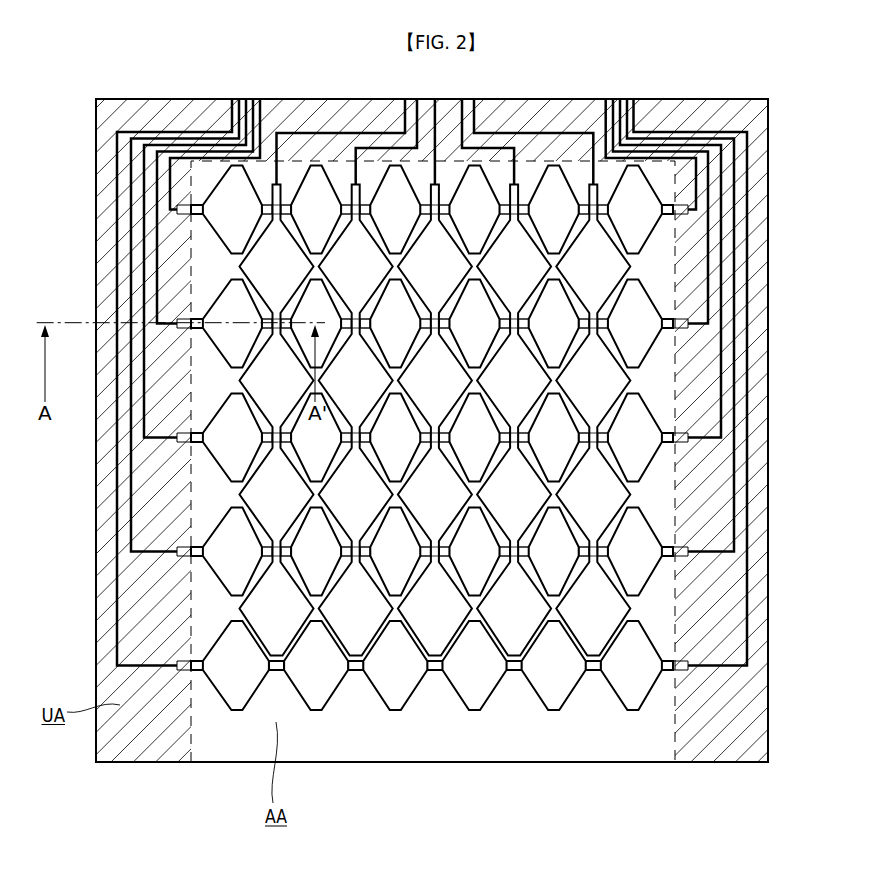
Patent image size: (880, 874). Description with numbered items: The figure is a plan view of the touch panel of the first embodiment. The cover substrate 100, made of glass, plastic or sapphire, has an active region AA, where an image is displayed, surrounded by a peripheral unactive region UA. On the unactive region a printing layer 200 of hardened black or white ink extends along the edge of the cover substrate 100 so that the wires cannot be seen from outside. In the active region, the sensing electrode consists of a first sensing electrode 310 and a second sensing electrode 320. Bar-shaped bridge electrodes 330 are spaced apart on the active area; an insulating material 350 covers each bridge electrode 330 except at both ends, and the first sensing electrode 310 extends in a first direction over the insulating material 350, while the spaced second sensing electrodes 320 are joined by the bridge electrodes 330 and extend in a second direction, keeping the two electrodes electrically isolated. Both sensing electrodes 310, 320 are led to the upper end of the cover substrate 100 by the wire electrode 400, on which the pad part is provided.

The cover substrate 100 is at (768, 727).
The printing layer 200 is at (717, 742).
The first sensing electrode 310 is at (596, 620).
The second sensing electrode 320 is at (640, 450).
The bridge electrode 330 is at (600, 432).
The insulating material 350 is at (603, 548).
The wire electrode 400 is at (117, 244).